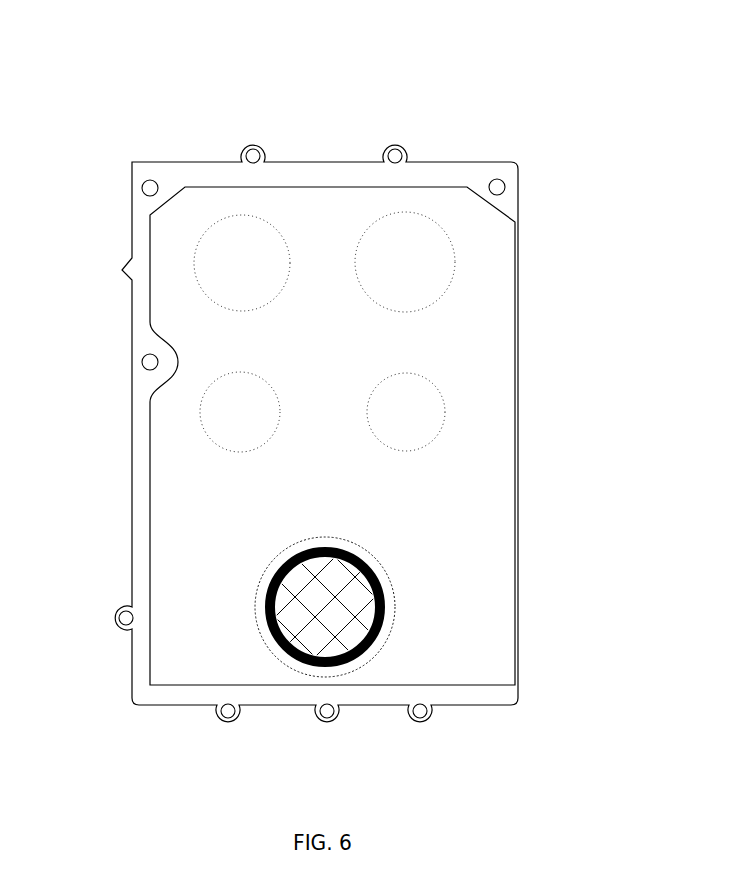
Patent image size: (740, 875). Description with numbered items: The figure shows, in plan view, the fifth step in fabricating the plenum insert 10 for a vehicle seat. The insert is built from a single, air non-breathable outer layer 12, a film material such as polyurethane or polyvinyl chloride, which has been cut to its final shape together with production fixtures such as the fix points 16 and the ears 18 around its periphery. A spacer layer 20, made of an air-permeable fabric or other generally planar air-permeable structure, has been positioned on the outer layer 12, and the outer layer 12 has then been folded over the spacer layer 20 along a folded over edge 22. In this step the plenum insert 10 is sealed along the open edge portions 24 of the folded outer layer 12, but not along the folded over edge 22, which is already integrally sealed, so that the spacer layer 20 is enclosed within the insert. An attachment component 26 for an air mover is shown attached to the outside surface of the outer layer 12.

The plenum insert 10 is at (379, 74).
The outer layer 12 is at (395, 355).
The fix points 16 is at (147, 183).
The ears 18 is at (256, 149).
The spacer layer 20 is at (285, 600).
The folded over edge 22 is at (520, 622).
The portions of the folded outer layer 24 is at (403, 188).
The attachment component 26 is at (385, 598).